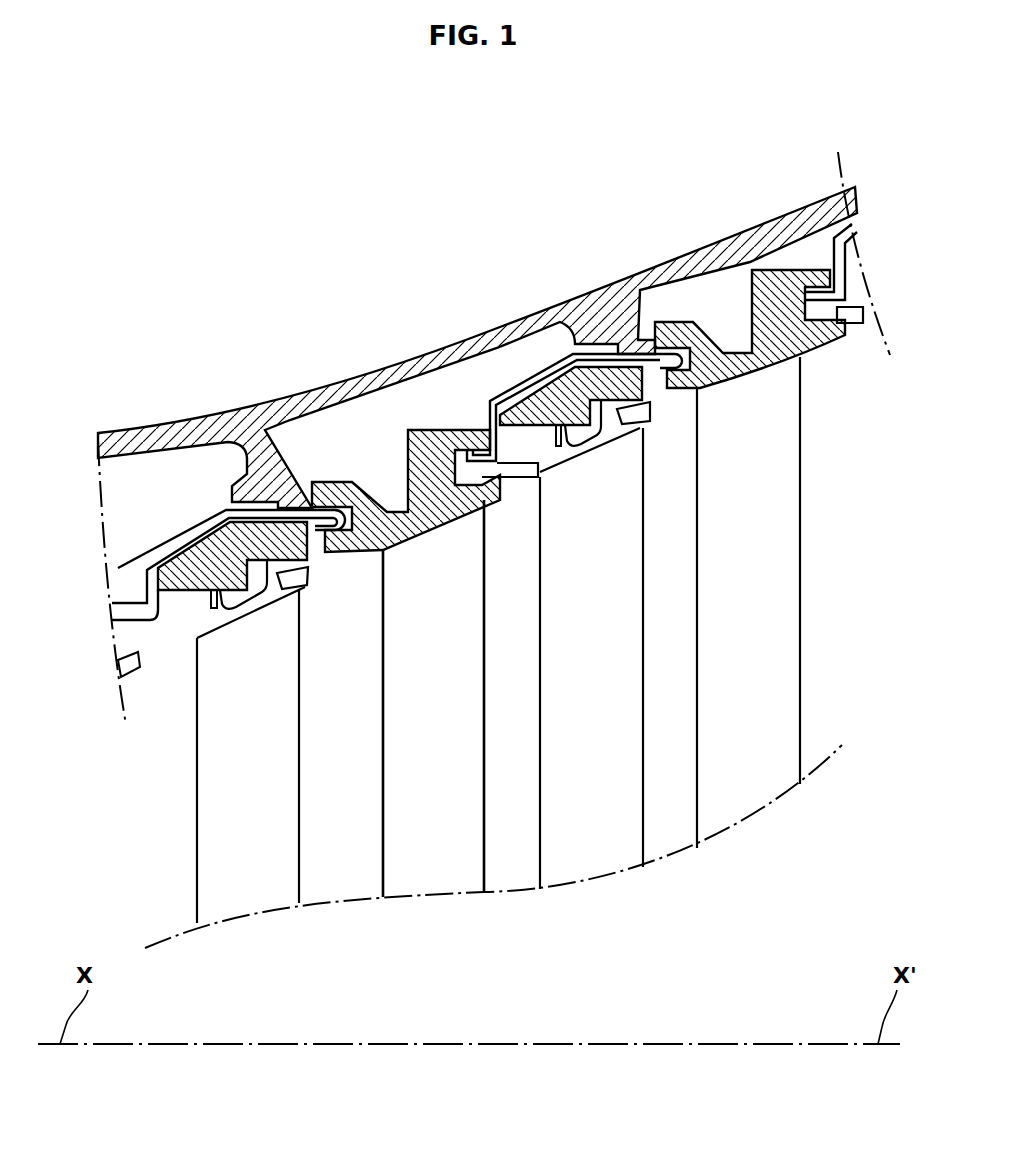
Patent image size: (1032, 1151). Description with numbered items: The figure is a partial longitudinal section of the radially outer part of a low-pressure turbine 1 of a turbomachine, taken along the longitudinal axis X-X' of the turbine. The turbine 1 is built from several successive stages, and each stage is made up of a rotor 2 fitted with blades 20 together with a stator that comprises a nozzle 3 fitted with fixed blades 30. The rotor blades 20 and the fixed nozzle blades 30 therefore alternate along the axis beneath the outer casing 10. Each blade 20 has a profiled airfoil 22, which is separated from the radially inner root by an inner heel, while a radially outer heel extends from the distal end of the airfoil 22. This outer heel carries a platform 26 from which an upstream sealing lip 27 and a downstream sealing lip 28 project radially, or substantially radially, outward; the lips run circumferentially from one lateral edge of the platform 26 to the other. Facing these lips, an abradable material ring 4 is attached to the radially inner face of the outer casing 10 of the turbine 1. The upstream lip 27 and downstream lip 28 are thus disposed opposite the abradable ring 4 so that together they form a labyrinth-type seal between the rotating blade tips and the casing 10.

The turbine 1 is at (400, 188).
The outer casing 10 is at (510, 334).
The abradable material ring 4 is at (236, 559).
The blade 20 is at (186, 785).
The profiled airfoil 22 is at (259, 753).
The fixed blade 30 is at (446, 708).
The platform 26 is at (253, 607).
The upstream sealing lip 27 is at (213, 598).
The downstream sealing lip 28 is at (283, 572).
The rotor 2 is at (254, 944).
The nozzle 3 is at (439, 922).